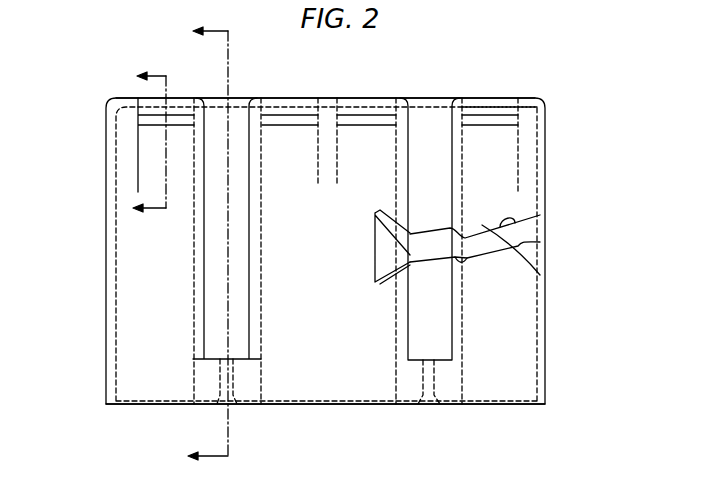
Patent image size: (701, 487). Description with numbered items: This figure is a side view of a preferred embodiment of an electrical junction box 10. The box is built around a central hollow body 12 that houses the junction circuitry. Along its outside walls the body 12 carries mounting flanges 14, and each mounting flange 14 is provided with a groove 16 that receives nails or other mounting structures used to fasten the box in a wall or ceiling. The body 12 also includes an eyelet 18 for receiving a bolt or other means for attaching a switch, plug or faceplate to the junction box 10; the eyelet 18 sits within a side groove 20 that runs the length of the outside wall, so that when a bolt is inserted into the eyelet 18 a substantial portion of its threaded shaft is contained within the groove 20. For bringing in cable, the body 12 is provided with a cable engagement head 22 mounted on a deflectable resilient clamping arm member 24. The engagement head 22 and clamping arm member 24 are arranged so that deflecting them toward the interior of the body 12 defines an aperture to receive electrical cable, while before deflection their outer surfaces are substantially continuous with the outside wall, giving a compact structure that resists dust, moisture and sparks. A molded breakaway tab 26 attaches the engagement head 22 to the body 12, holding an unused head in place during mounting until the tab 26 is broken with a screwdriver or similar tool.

The electrical junction box 10 is at (76, 293).
The central hollow body 12 is at (302, 404).
The mounting flange 14 is at (533, 225).
The groove 16 is at (546, 276).
The eyelet 18 is at (447, 400).
The side groove 20 is at (428, 115).
The cable engagement head 22 is at (514, 126).
The deflectable resilient clamping arm member 24 is at (503, 163).
The molded breakaway tab 26 is at (498, 103).